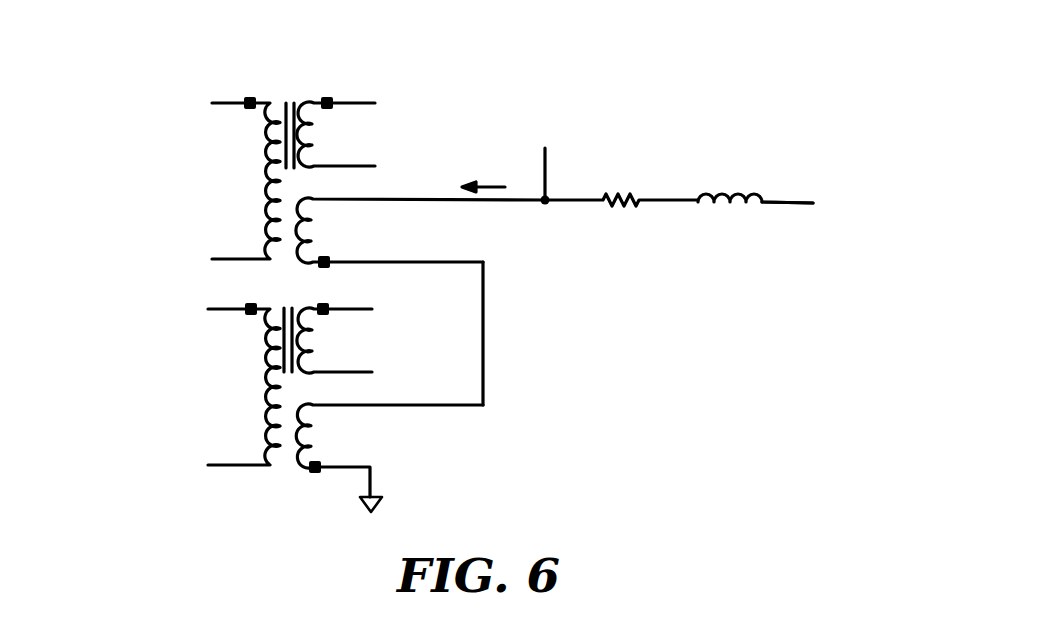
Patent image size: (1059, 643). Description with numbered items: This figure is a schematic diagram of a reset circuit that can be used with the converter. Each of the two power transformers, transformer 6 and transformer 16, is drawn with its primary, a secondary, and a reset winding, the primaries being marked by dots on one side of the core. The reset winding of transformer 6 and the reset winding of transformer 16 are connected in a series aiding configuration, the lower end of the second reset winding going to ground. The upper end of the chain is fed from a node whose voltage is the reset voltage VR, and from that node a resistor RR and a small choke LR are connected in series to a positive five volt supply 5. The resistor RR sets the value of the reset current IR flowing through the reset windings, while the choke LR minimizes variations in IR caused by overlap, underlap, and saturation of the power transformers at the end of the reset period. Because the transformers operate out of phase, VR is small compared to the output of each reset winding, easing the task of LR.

The transformer 6 is at (302, 182).
The transformer 16 is at (268, 407).
The reset voltage VR is at (545, 162).
The reset current IR is at (486, 173).
The resistor RR is at (621, 184).
The choke LR is at (755, 185).
The +5V DC supply 5 is at (838, 207).